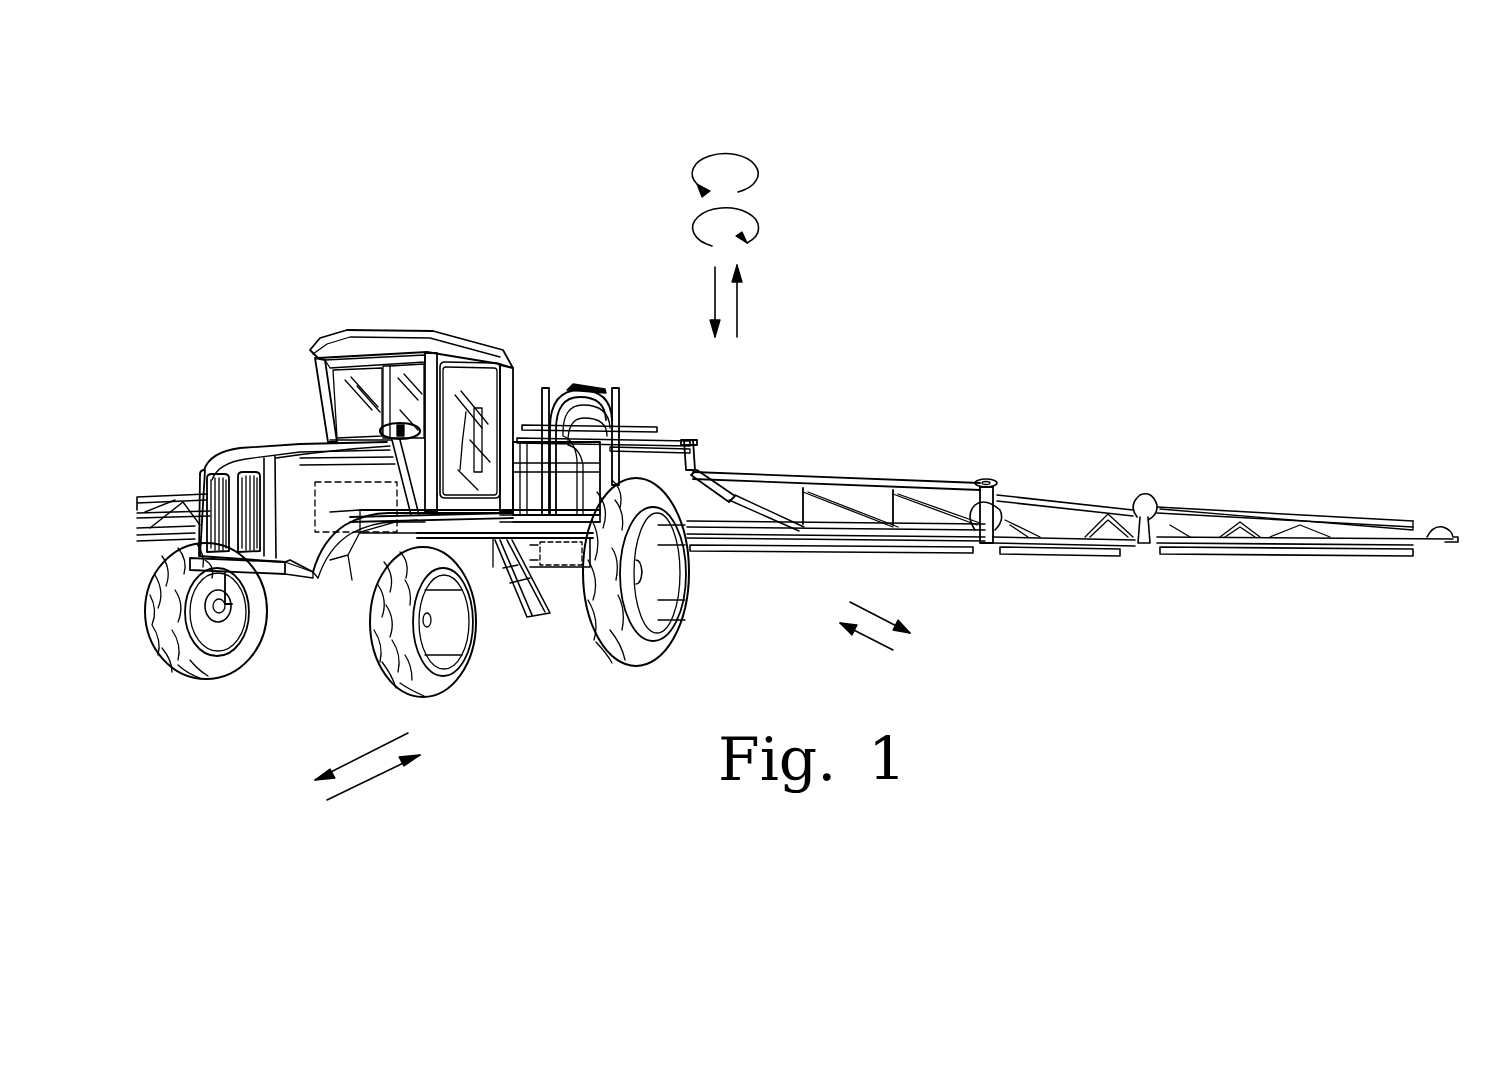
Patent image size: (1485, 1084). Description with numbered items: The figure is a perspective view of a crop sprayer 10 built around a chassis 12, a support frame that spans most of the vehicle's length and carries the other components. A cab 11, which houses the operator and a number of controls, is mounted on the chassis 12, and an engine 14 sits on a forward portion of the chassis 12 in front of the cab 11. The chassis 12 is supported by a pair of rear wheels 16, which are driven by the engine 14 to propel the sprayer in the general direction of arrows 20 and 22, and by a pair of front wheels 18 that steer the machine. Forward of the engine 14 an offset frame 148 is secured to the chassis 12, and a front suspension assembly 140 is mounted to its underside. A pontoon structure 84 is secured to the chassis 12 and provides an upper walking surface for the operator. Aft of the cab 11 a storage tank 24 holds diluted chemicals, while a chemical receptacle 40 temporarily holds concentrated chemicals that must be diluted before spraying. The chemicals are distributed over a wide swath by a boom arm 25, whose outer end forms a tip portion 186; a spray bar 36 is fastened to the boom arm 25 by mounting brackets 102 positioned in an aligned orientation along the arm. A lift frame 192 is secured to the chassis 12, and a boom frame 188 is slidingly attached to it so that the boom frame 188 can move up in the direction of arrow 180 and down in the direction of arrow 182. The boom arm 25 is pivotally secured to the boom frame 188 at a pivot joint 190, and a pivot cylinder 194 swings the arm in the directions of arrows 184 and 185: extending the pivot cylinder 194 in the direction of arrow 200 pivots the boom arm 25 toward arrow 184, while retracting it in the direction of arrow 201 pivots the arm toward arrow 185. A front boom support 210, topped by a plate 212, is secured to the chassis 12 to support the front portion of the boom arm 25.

The crop sprayer 10 is at (320, 212).
The cab 11 is at (373, 332).
The chassis 12 is at (556, 560).
The engine 14 is at (335, 465).
The rear wheels 16 is at (658, 650).
The front wheels 18 is at (442, 685).
The arrow 20 is at (368, 752).
The arrow 22 is at (366, 787).
The storage tank 24 is at (520, 440).
The boom arm 25 is at (818, 480).
The spray bar 36 is at (1010, 474).
The chemical receptacle 40 is at (566, 580).
The pontoon structure 84 is at (493, 570).
The mounting bracket 102 is at (765, 556).
The front suspension assembly 140 is at (340, 582).
The offset frame 148 is at (362, 545).
The arrow 180 is at (740, 308).
The arrow 182 is at (712, 300).
The arrow 184 is at (758, 228).
The arrow 185 is at (756, 172).
The tip portion 186 is at (1205, 515).
The boom frame 188 is at (660, 440).
The pivot joint 190 is at (690, 463).
The lift frame 192 is at (618, 392).
The pivot cylinder 194 is at (735, 482).
The arrow 200 is at (878, 607).
The arrow 201 is at (872, 650).
The front boom support 210 is at (560, 410).
The plate 212 is at (600, 383).